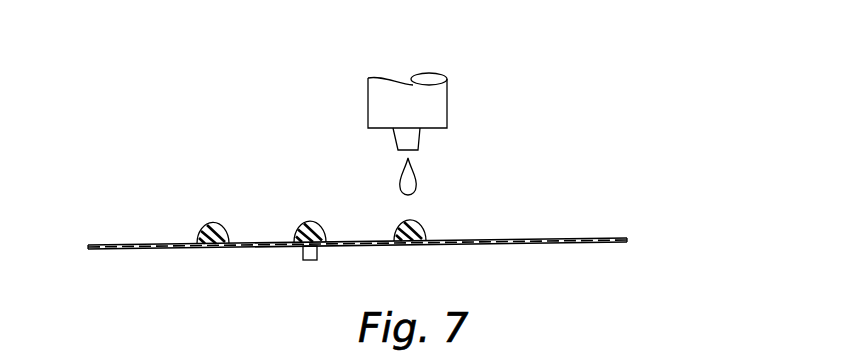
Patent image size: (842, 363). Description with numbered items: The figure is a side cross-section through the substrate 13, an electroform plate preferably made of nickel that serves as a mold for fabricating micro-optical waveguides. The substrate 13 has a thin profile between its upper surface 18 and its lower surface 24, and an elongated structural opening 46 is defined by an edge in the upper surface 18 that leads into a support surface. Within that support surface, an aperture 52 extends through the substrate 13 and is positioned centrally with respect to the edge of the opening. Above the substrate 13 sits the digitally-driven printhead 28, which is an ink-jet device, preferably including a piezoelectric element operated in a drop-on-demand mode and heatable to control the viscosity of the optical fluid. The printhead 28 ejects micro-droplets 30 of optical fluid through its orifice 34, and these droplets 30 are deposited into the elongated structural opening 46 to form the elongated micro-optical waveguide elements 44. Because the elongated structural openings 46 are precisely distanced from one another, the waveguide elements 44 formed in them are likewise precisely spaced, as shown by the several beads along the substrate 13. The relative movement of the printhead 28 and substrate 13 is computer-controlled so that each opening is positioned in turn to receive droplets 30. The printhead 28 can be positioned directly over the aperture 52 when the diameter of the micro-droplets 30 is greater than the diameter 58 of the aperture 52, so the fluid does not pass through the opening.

The substrate 13 is at (88, 246).
The upper surface 18 is at (617, 239).
The lower surface 24 is at (603, 243).
The digitally-driven printhead 28 is at (447, 94).
The micro-droplets 30 is at (415, 182).
The orifice 34 is at (418, 148).
The micro-optical waveguide elements 44 is at (207, 226).
The elongated structural opening 46 is at (571, 238).
The aperture 52 is at (206, 248).
The diameter 58 is at (311, 262).